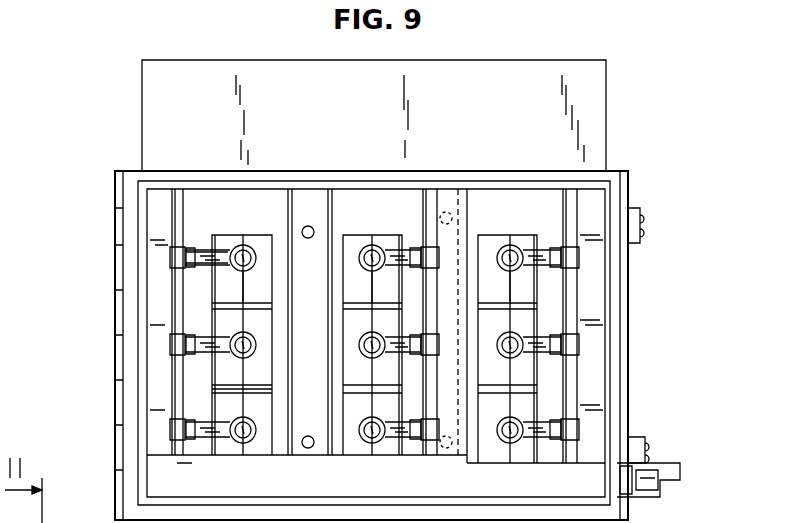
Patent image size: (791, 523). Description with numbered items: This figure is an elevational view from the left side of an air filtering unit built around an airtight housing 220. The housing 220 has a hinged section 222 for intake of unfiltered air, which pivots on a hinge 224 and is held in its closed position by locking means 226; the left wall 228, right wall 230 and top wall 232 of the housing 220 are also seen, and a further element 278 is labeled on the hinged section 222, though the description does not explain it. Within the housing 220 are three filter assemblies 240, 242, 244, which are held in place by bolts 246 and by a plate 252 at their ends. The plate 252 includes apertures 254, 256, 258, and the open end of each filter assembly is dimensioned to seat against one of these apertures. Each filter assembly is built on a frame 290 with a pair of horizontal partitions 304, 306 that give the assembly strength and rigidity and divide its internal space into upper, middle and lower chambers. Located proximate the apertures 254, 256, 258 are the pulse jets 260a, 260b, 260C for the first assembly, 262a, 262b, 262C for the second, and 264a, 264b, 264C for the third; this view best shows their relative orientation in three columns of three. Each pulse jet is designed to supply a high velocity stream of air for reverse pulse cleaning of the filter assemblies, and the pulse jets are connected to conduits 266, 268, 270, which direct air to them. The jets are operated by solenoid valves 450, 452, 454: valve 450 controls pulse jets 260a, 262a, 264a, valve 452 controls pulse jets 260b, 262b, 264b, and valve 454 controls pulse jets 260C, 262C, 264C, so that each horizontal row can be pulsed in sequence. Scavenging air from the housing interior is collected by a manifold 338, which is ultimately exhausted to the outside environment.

The airtight housing 220 is at (128, 378).
The hinged section 222 is at (133, 110).
The hinge 224 is at (113, 232).
The locking means 226 is at (641, 216).
The left wall 228 is at (137, 312).
The right wall 230 is at (618, 315).
The top wall 232 is at (348, 182).
The filter assembly 240 is at (258, 285).
The filter assembly 242 is at (352, 287).
The filter assembly 244 is at (526, 284).
The bolt 246 is at (309, 226).
The plate 252 is at (400, 197).
The aperture 254 is at (215, 235).
The aperture 256 is at (346, 235).
The aperture 258 is at (487, 235).
The pulse jet 260a is at (247, 255).
The pulse jet 260b is at (252, 347).
The pulse jet 260C is at (245, 432).
The pulse jet 262a is at (372, 255).
The pulse jet 262b is at (360, 353).
The pulse jet 262C is at (378, 432).
The pulse jet 264a is at (512, 252).
The pulse jet 264b is at (518, 352).
The pulse jet 264C is at (512, 436).
The conduit 266 is at (155, 267).
The conduit 268 is at (447, 197).
The conduit 270 is at (592, 203).
The window 278 is at (244, 72).
The frame 290 is at (557, 522).
The horizontal partition 304 is at (225, 302).
The horizontal partition 306 is at (220, 388).
The manifold 338 is at (185, 462).
The solenoid valve 450 is at (257, 258).
The solenoid valve 452 is at (359, 348).
The solenoid valve 454 is at (360, 427).